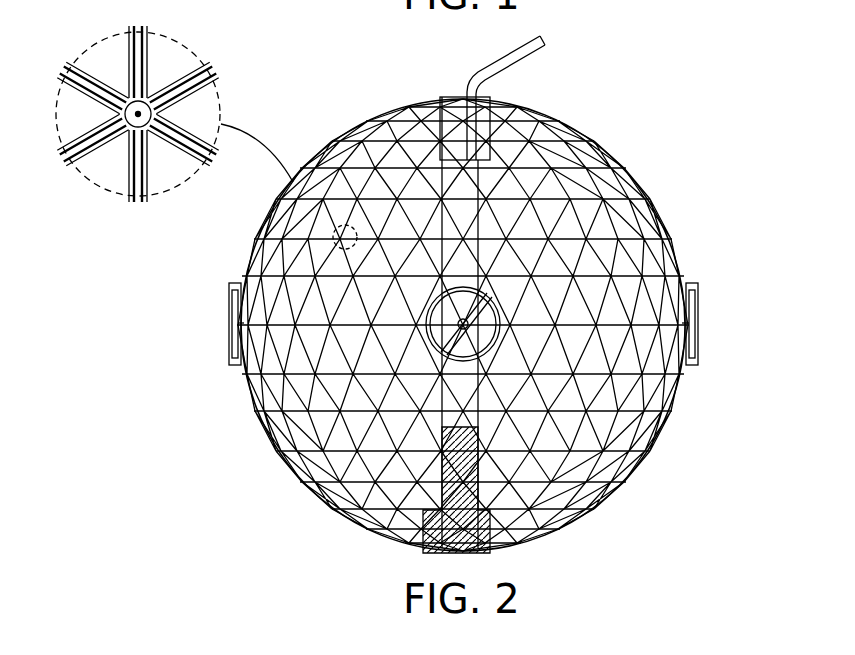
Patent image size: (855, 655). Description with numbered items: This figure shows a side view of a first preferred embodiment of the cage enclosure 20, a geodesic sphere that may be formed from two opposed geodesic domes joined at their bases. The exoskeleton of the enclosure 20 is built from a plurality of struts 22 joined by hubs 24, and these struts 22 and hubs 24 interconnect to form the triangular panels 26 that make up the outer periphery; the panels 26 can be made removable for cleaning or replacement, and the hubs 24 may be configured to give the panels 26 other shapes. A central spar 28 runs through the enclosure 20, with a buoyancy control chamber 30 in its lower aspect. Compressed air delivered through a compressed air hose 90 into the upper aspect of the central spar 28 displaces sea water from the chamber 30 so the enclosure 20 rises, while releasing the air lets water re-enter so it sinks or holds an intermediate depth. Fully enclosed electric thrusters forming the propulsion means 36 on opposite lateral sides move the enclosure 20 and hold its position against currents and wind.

The cage enclosure 20 is at (686, 493).
The struts 22 is at (87, 78).
The hubs 24 is at (155, 97).
The triangular panels 26 is at (365, 147).
The central spar 28 is at (523, 175).
The buoyancy control chamber 30 is at (497, 550).
The propulsion means 36 is at (229, 340).
The compressed air hose 90 is at (552, 42).